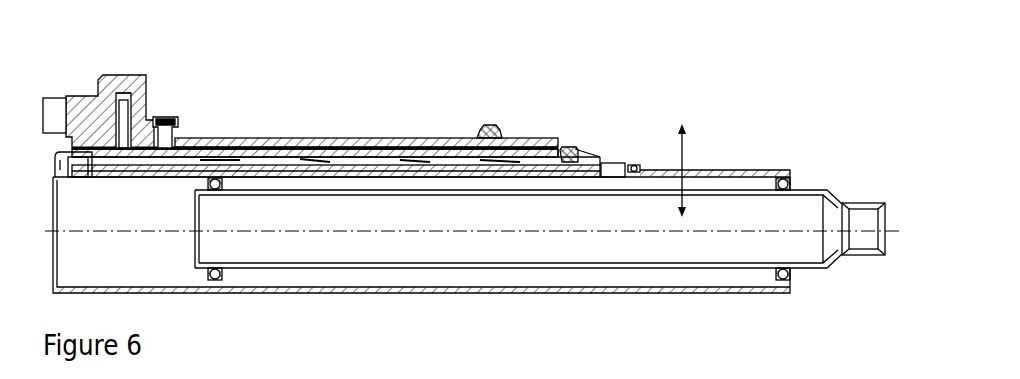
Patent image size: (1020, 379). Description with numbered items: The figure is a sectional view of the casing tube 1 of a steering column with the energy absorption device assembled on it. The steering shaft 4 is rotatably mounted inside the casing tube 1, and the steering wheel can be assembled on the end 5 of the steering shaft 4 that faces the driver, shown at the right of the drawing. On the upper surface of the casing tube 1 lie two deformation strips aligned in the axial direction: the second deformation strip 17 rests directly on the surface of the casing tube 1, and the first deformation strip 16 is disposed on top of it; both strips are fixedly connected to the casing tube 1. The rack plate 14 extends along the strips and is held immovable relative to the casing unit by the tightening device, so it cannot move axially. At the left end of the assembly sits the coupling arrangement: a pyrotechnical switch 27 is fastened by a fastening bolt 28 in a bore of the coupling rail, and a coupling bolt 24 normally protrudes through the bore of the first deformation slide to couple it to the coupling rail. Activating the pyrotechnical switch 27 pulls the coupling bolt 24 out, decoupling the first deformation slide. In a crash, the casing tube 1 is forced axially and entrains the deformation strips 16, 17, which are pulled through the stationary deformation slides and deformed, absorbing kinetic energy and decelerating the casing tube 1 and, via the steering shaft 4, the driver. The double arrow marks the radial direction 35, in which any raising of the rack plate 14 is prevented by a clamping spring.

The casing tube 1 is at (745, 160).
The steering shaft 4 is at (800, 184).
The end 5 is at (870, 205).
The rack plate 14 is at (350, 138).
The first deformation strip 16 is at (530, 147).
The second deformation strip 17 is at (457, 146).
The coupling bolt 24 is at (121, 76).
The pyrotechnical switch 27 is at (141, 66).
The fastening bolt 28 is at (166, 116).
The radial direction 35 is at (678, 150).